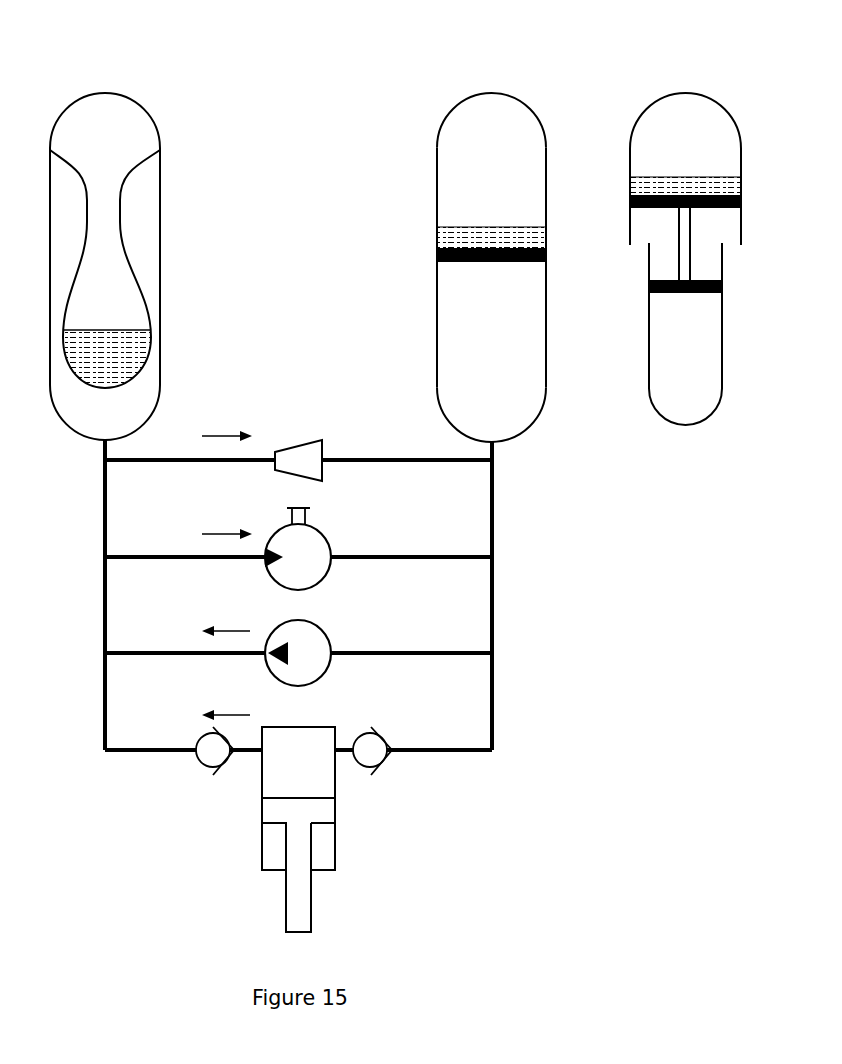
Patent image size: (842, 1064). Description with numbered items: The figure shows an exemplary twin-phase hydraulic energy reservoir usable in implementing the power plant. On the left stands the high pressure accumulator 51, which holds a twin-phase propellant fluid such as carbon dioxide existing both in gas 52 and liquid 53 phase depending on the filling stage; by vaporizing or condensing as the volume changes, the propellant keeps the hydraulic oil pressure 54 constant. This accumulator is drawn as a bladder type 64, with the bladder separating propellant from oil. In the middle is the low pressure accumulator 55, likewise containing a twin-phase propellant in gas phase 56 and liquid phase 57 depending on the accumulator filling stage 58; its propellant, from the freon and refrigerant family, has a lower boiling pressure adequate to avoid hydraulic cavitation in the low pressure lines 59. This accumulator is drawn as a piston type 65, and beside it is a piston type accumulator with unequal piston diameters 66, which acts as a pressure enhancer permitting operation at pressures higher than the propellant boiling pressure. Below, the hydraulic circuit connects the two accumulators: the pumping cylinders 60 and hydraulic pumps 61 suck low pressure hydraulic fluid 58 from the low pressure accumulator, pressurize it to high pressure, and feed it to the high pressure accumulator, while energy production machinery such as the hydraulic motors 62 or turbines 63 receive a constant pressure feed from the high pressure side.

The high pressure accumulator 51 is at (93, 93).
The gas phase propellant 52 is at (122, 125).
The liquid phase propellant 53 is at (108, 350).
The hydraulic oil pressure 54 is at (112, 405).
The low pressure accumulator 55 is at (472, 93).
The gas phase 56 is at (470, 150).
The liquid phase 57 is at (512, 228).
The low pressure hydraulic fluid 58 is at (508, 362).
The low pressure lines 59 is at (495, 617).
The pumping cylinder 60 is at (335, 843).
The hydraulic pump 61 is at (325, 628).
The hydraulic motor 62 is at (330, 538).
The turbine 63 is at (300, 440).
The bladder type accumulator 64 is at (122, 208).
The piston type accumulator 65 is at (437, 250).
The unequal piston diameters 66 is at (678, 244).